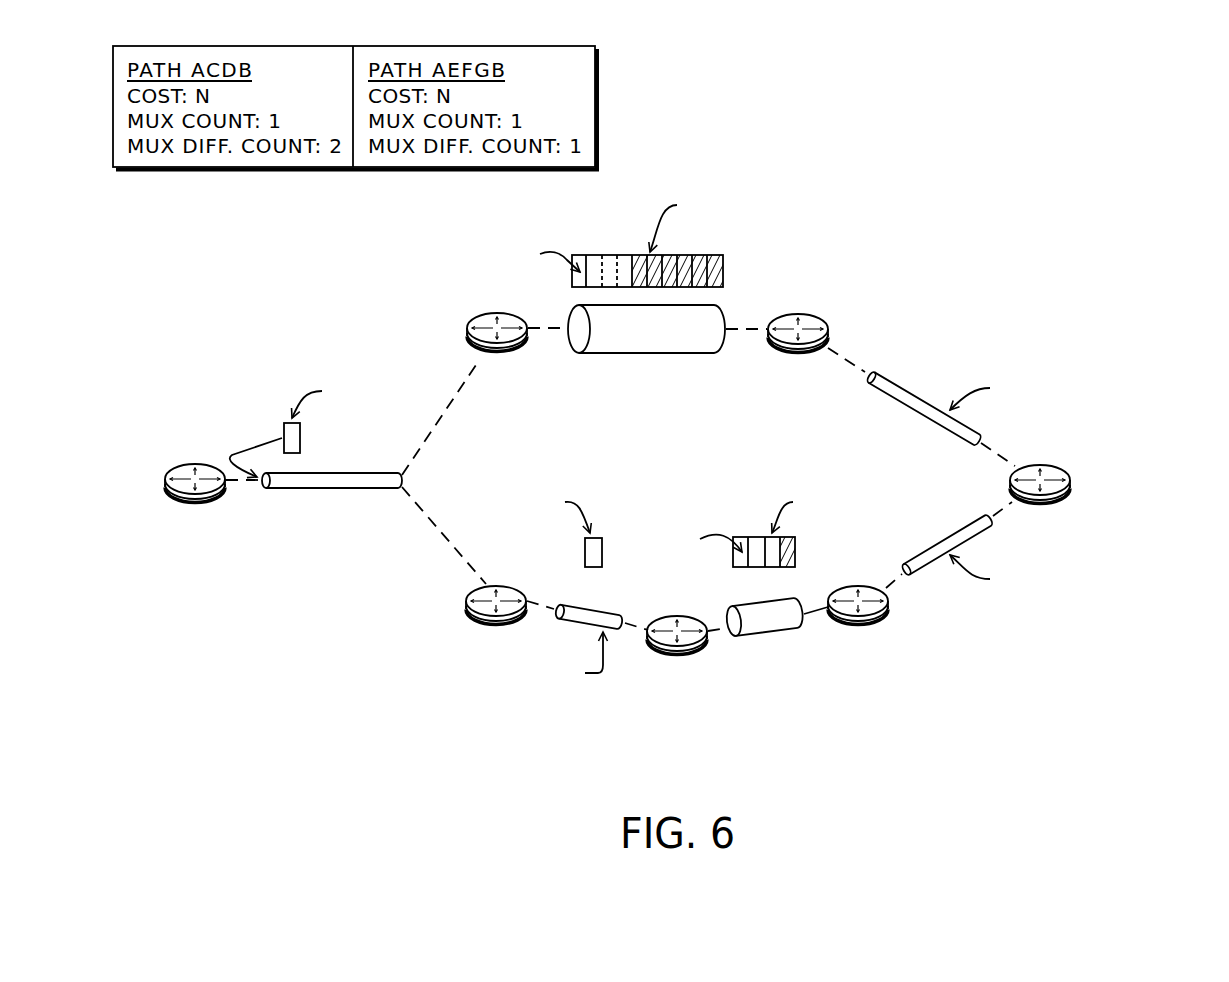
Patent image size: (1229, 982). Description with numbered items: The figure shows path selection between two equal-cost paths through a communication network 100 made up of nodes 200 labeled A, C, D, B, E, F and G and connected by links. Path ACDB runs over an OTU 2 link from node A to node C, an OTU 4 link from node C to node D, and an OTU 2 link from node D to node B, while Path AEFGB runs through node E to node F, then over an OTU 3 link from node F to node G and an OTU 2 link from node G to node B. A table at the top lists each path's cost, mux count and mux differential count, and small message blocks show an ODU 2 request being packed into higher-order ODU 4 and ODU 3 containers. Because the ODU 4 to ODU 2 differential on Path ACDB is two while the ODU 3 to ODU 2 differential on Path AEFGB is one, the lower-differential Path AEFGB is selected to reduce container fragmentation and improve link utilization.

The communication network 100 is at (1147, 103).
The node 200 is at (178, 462).
The OTU 2 link 2 is at (295, 492).
The OTU 3 link 3 is at (753, 639).
The OTU 4 link 4 is at (683, 340).